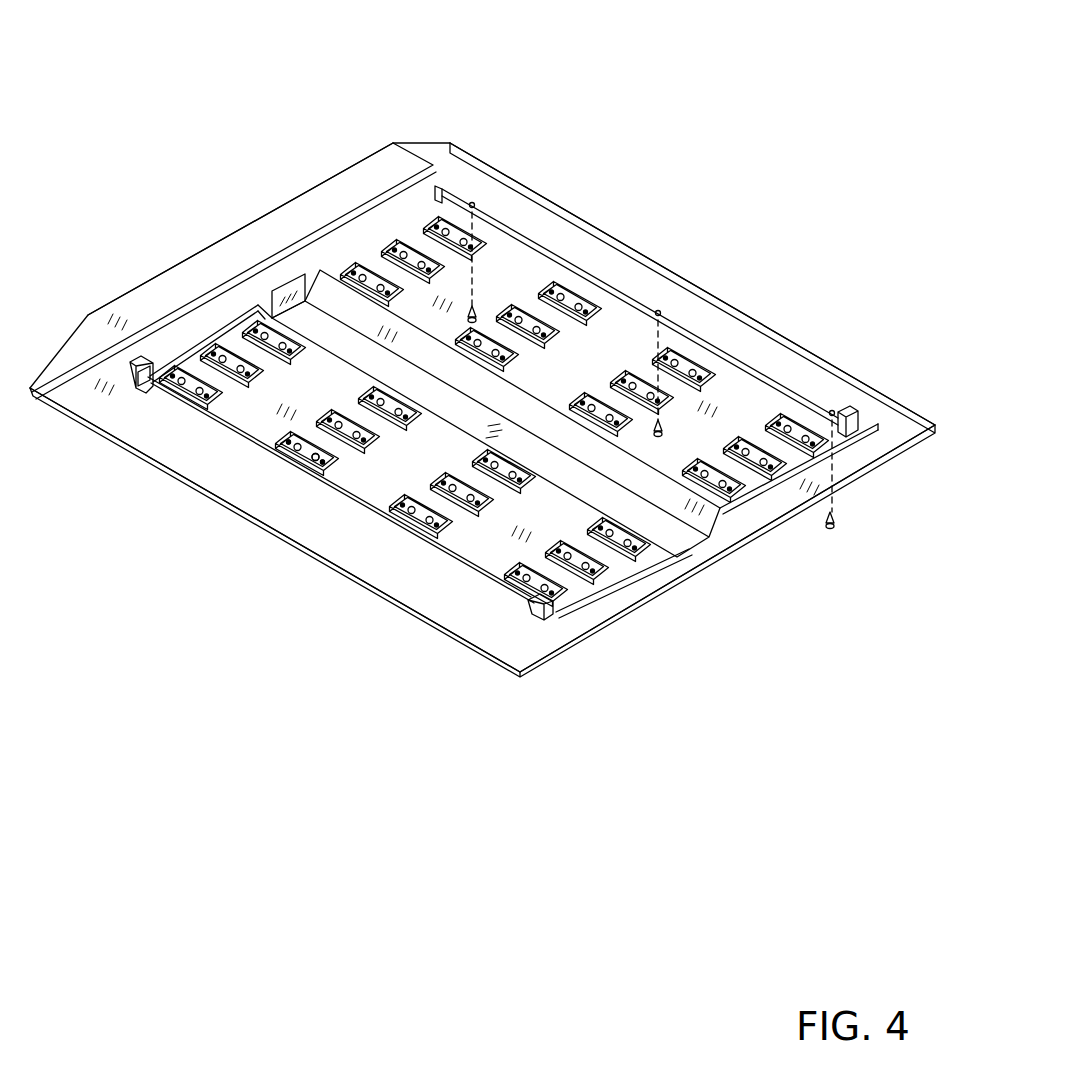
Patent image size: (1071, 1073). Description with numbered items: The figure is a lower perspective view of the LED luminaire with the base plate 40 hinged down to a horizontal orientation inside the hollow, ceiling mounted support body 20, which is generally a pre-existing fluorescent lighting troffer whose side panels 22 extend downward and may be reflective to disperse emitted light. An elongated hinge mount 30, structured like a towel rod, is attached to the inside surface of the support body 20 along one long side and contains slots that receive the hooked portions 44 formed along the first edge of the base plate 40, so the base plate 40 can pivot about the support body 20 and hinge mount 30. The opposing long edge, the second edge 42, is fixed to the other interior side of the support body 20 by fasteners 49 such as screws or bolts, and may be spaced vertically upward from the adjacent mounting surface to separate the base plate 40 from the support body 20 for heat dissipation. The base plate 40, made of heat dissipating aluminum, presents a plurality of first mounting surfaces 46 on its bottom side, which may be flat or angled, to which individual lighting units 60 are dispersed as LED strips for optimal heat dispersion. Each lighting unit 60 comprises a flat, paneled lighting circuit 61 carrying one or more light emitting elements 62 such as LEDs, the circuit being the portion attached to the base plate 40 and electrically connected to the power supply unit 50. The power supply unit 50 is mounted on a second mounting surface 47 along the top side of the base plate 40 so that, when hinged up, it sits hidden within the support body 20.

The support body 20 is at (375, 148).
The side panels 22 is at (589, 252).
The hinge mount 30 is at (441, 563).
The base plate 40 is at (358, 243).
The second edge 42 is at (735, 356).
The hooked portion 44 is at (140, 392).
The first mounting surfaces 46 is at (147, 372).
The second mounting surface 47 is at (270, 300).
The fasteners 49 is at (474, 314).
The power supply unit 50 is at (240, 343).
The lighting units 60 is at (342, 468).
The lighting circuit 61 is at (311, 461).
The light emitting elements 62 is at (289, 446).